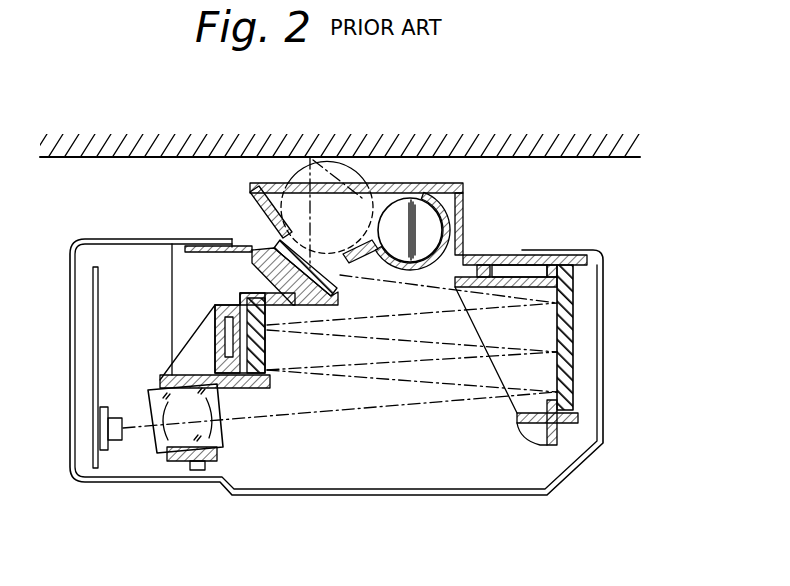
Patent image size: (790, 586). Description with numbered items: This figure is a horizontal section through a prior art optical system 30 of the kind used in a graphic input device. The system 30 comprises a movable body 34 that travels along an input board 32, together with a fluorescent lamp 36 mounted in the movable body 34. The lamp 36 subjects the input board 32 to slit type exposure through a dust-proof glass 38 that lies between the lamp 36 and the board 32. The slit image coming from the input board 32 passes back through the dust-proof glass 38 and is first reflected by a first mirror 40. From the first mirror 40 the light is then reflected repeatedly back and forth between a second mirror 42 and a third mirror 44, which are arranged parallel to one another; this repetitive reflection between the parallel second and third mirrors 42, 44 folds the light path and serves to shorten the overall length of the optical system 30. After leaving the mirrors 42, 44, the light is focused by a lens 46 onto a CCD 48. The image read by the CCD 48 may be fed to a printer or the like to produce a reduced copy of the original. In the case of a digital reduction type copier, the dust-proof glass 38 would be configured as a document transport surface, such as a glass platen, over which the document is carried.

The optical system 30 is at (597, 115).
The input board 32 is at (617, 160).
The movable body 34 is at (582, 463).
The fluorescent lamp 36 is at (450, 223).
The dust-proof glass 38 is at (390, 183).
The first mirror 40 is at (273, 238).
The second mirror 42 is at (575, 335).
The third mirror 44 is at (263, 390).
The lens 46 is at (183, 433).
The CCD 48 is at (113, 430).